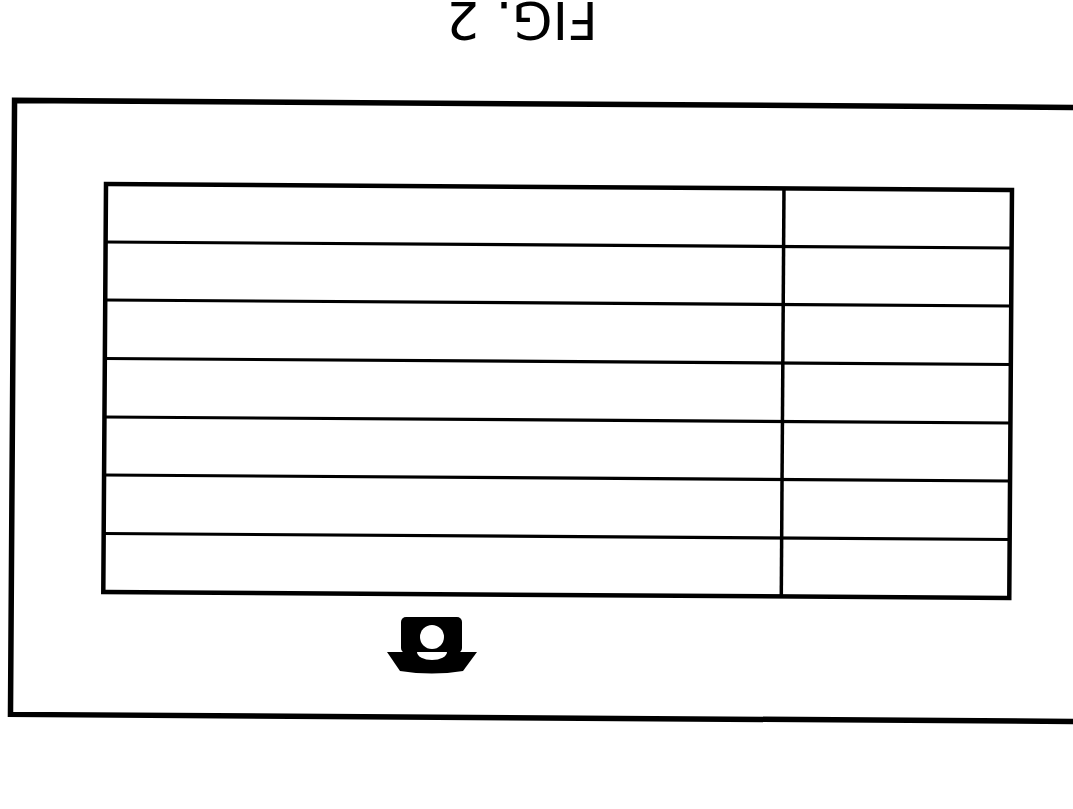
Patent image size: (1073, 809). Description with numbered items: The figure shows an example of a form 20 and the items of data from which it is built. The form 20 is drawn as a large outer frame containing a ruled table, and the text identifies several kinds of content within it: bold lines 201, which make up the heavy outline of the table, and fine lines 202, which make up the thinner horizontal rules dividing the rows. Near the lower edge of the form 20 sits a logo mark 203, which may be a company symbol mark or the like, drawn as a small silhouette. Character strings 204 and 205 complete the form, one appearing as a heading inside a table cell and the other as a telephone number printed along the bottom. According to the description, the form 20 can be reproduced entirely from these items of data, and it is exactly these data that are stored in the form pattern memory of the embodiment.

The form 20 is at (577, 720).
The bold lines 201 is at (670, 600).
The fine lines 202 is at (472, 537).
The logo mark 203 is at (476, 658).
The character string 204 is at (895, 587).
The character string 205 is at (260, 668).